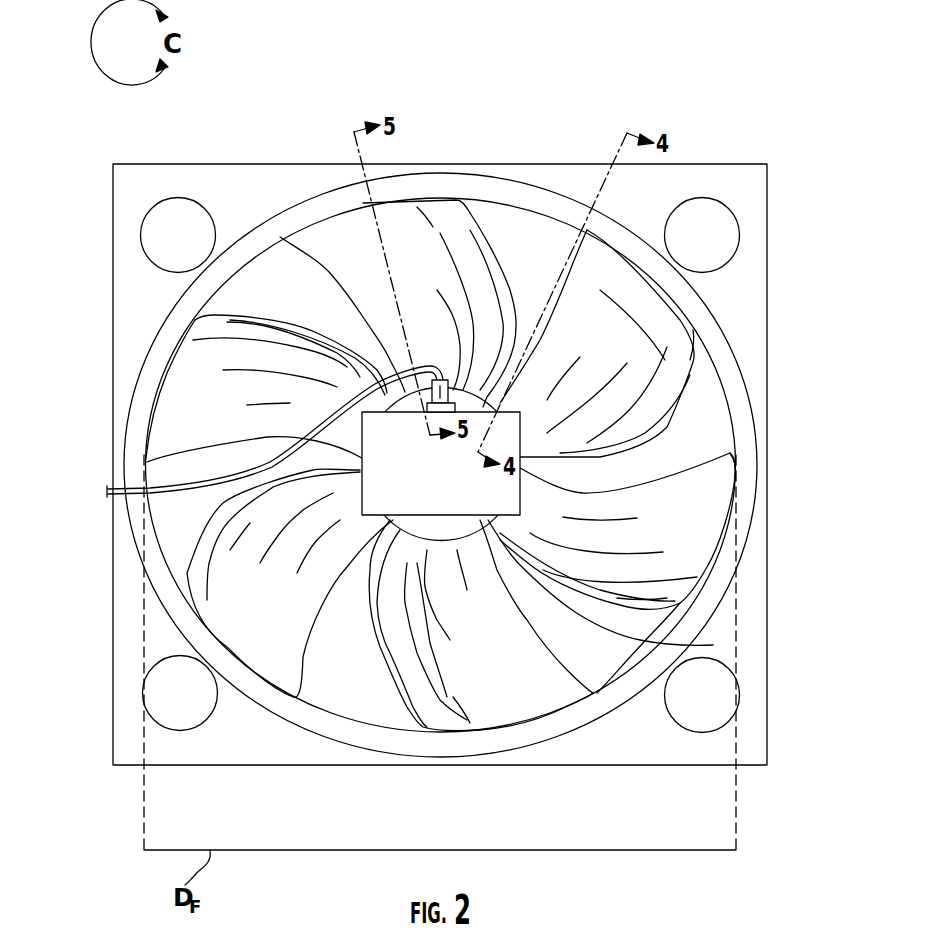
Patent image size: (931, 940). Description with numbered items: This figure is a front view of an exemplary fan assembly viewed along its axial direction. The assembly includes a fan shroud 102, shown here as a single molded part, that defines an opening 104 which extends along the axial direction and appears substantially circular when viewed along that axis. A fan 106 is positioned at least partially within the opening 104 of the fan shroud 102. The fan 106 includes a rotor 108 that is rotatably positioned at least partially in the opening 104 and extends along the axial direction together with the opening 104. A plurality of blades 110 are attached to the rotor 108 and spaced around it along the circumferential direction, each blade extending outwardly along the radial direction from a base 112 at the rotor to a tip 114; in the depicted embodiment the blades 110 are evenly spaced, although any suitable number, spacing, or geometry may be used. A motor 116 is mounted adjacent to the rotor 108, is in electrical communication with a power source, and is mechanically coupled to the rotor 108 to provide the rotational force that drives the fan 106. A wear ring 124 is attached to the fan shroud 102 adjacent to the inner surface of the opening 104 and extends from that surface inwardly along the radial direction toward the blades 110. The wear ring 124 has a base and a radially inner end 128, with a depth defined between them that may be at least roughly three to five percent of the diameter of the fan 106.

The fan shroud 102 is at (147, 173).
The opening 104 is at (172, 530).
The fan 106 is at (178, 380).
The rotor 108 is at (713, 645).
The blades 110 is at (663, 373).
The base 112 is at (410, 548).
The tip 114 is at (660, 300).
The motor 116 is at (390, 490).
The wear ring 124 is at (623, 237).
The radially inner end 128 is at (249, 272).